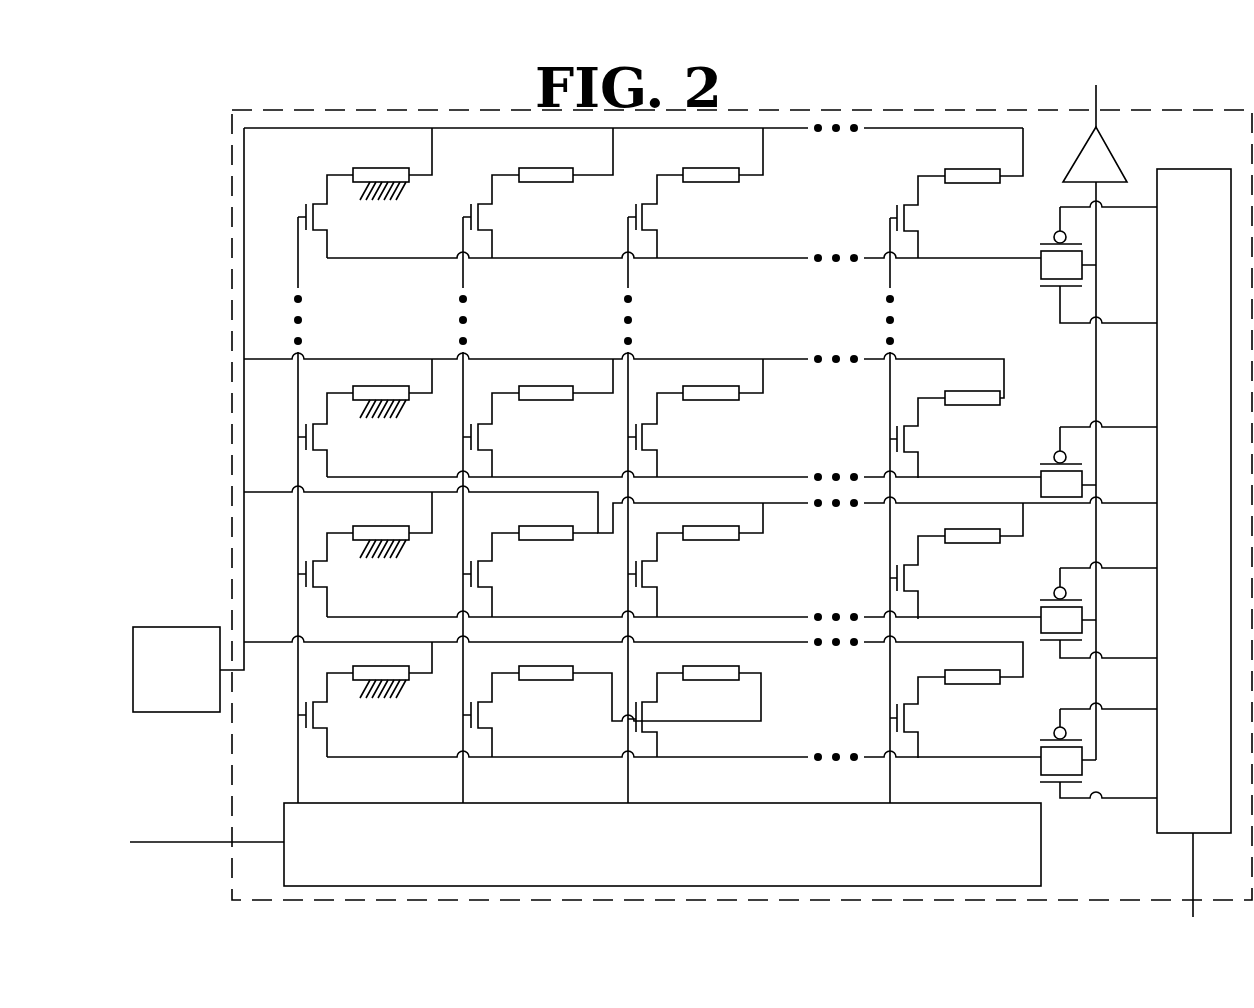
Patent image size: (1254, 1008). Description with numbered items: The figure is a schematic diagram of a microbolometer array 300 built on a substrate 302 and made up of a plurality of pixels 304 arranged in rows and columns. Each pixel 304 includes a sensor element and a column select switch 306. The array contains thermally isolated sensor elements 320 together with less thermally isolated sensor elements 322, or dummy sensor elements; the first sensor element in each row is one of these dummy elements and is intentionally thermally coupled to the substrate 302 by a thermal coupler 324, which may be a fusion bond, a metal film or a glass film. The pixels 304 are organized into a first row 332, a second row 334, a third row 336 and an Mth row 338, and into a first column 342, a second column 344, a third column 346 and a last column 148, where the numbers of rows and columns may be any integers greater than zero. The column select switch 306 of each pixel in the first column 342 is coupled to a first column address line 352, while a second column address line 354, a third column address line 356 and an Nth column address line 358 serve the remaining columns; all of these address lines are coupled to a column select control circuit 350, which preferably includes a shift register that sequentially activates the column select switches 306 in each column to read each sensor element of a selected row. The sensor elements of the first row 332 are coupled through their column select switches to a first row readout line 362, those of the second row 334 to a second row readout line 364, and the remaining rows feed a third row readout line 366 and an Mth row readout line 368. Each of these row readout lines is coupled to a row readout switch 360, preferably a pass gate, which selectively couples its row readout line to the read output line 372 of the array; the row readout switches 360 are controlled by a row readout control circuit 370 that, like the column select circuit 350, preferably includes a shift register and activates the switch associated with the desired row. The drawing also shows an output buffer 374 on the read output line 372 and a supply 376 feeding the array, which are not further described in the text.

The microbolometer array 300 is at (797, 93).
The substrate 302 is at (965, 105).
The pixel 304 is at (387, 171).
The column select switch 306 is at (307, 203).
The thermally isolated sensor element 320 is at (560, 182).
The less thermally isolated sensor element 322 is at (390, 167).
The thermal coupler 324 is at (393, 200).
The first row 332 is at (227, 737).
The second row 334 is at (230, 532).
The third row 336 is at (222, 442).
The Mth row 338 is at (217, 173).
The first column 342 is at (387, 431).
The second column 344 is at (542, 763).
The third column 346 is at (733, 763).
The last column of pixels 148 is at (968, 765).
The column select control circuit 350 is at (871, 842).
The first column address line 352 is at (298, 760).
The second column address line 354 is at (462, 773).
The third column address line 356 is at (628, 776).
The Nth column address line 358 is at (890, 680).
The row readout switch 360 is at (1040, 300).
The first row readout line 362 is at (387, 757).
The second row readout line 364 is at (360, 615).
The third row readout line 366 is at (368, 477).
The Mth row readout line 368 is at (402, 259).
The row readout control circuit 370 is at (1177, 690).
The read output line 372 is at (1097, 233).
The output amplifier 374 is at (1083, 179).
The supply 376 is at (162, 655).